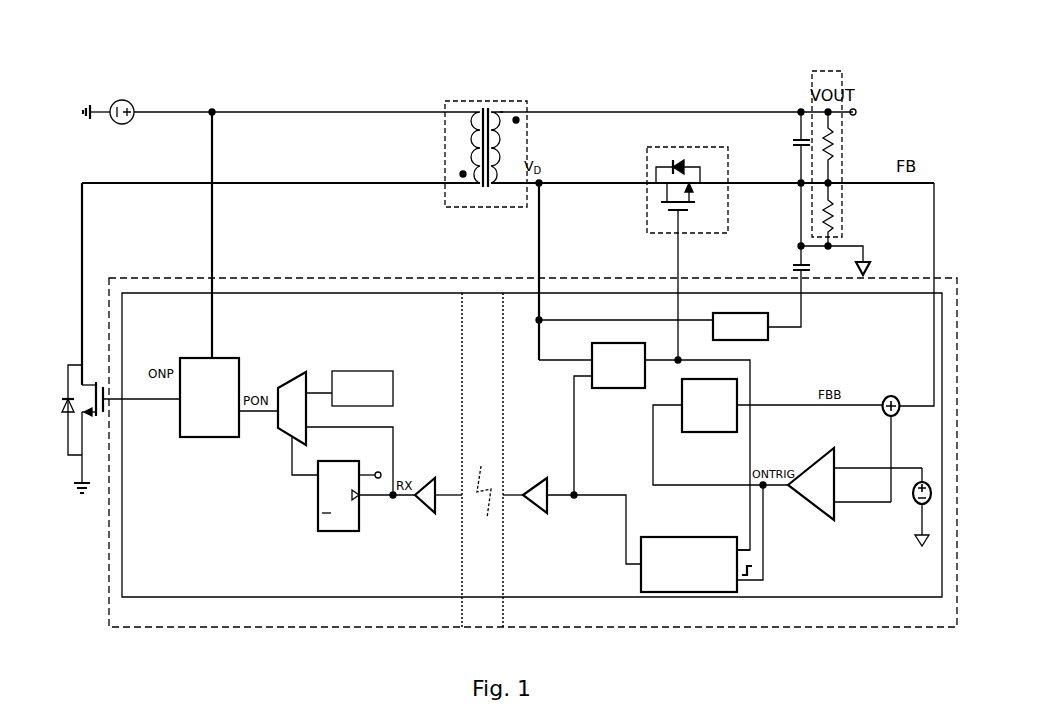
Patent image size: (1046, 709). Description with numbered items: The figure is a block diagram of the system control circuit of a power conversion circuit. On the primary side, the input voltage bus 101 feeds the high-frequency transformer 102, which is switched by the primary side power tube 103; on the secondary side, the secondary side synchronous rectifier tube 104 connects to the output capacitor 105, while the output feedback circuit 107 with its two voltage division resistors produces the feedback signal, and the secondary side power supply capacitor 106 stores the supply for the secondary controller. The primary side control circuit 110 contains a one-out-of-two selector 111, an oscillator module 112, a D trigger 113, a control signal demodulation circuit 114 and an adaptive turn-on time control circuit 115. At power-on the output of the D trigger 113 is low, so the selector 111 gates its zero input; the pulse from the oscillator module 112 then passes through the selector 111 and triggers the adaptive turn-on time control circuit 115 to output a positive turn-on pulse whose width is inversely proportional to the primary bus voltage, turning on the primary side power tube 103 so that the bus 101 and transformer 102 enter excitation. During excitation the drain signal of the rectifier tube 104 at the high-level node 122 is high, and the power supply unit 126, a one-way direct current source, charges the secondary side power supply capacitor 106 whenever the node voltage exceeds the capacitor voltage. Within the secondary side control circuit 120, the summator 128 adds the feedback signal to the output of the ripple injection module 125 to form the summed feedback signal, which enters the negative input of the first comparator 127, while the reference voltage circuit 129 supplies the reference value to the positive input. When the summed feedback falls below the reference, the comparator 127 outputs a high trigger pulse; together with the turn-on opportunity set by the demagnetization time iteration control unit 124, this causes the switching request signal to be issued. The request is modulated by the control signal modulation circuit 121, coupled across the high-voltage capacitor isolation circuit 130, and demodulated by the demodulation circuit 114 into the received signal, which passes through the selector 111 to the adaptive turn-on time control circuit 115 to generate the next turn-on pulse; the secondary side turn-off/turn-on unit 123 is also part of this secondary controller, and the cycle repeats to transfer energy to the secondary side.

The input voltage bus 101 is at (392, 112).
The high-frequency transformer 102 is at (500, 112).
The primary side power tube 103 is at (68, 386).
The secondary side synchronous rectifier tube 104 is at (705, 181).
The output capacitor 105 is at (796, 138).
The secondary side power supply capacitor 106 is at (794, 262).
The output feedback circuit 107 is at (830, 80).
The primary side control circuit 110 is at (272, 293).
The one-out-of-two selector 111 is at (304, 373).
The oscillator module 112 is at (395, 372).
The D trigger 113 is at (329, 531).
The control signal demodulation circuit 114 is at (422, 507).
The adaptive turn-on time control circuit 115 is at (239, 358).
The secondary side control circuit 120 is at (613, 293).
The control signal modulation circuit 121 is at (540, 478).
The high-level node 122 is at (538, 322).
The secondary side turn-off/turn-on unit 123 is at (645, 378).
The demagnetization time iteration control unit 124 is at (697, 537).
The ripple injection module 125 is at (682, 410).
The power supply unit 126 is at (768, 332).
The first comparator 127 is at (815, 462).
The summator 128 is at (884, 400).
The reference voltage circuit 129 is at (918, 484).
The high-voltage capacitor isolation circuit 130 is at (480, 293).